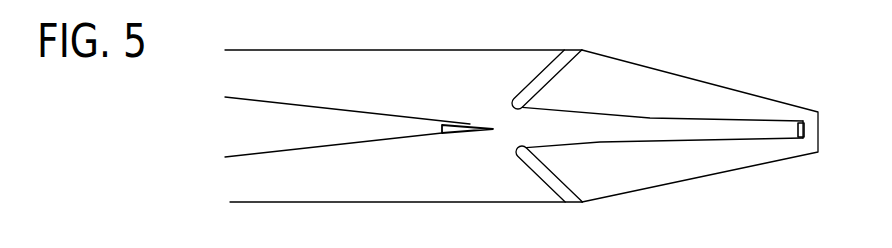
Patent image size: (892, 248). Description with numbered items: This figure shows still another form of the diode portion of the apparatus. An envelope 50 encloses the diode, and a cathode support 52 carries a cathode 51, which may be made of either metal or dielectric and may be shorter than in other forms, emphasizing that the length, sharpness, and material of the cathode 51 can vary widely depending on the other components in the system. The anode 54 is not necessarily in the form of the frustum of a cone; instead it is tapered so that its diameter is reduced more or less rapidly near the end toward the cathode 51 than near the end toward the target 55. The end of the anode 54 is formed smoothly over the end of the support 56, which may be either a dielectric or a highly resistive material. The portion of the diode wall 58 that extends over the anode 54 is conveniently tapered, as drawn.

The envelope 50 is at (378, 50).
The cathode 51 is at (466, 122).
The cathode support 52 is at (290, 105).
The anode 54 is at (633, 118).
The target 55 is at (801, 122).
The support 56 is at (542, 80).
The diode wall 58 is at (693, 80).